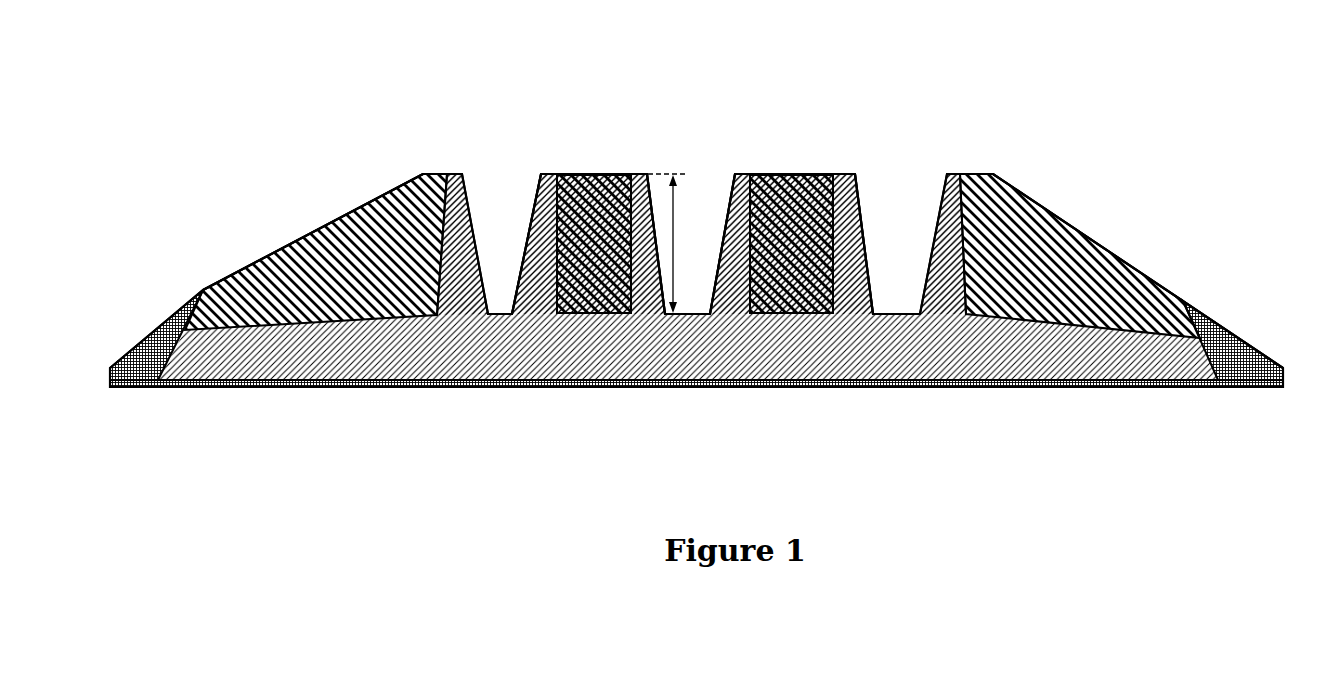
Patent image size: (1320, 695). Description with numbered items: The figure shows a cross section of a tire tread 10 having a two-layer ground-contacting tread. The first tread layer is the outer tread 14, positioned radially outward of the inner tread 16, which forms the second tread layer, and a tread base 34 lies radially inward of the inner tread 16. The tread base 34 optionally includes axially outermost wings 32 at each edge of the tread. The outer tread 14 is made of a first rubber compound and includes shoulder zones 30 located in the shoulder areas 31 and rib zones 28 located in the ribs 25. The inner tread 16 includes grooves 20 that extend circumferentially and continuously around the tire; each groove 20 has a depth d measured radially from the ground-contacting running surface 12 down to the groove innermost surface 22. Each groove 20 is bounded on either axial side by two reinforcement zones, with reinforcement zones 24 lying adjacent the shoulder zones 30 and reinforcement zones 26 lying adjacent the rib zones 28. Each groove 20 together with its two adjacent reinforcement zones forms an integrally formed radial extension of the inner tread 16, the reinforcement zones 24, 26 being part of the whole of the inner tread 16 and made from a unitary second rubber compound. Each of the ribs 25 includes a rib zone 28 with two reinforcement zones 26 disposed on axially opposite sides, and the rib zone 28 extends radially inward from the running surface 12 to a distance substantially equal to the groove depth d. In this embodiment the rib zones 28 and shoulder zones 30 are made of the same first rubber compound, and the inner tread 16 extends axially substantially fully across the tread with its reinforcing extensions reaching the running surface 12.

The tire tread 10 is at (272, 111).
The ground-contacting running surface 12 is at (620, 172).
The outer tread 14 is at (598, 208).
The inner tread 16 is at (848, 352).
The groove 20 is at (700, 221).
The groove innermost surface 22 is at (500, 311).
The reinforcement zone 24 is at (457, 193).
The rib 25 is at (588, 165).
The reinforcement zone 26 is at (540, 208).
The rib zone 28 is at (783, 205).
The shoulder zone 30 is at (328, 253).
The shoulder area 31 is at (373, 186).
The wing 32 is at (150, 360).
The tread base 34 is at (348, 384).